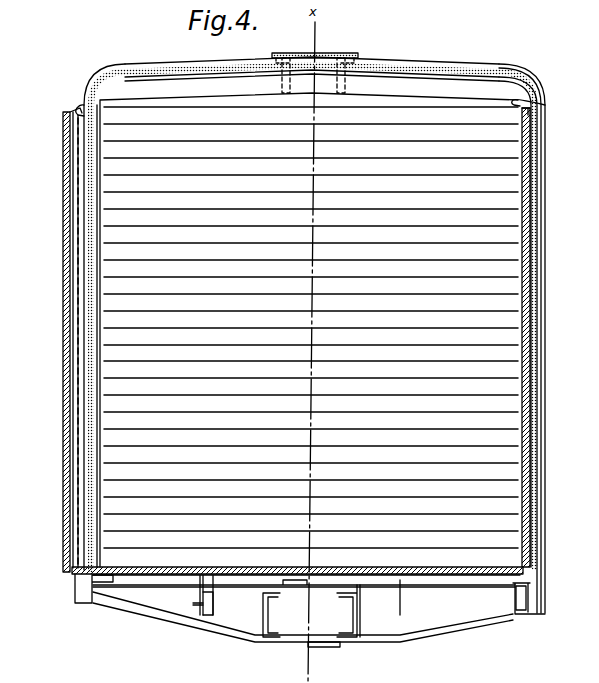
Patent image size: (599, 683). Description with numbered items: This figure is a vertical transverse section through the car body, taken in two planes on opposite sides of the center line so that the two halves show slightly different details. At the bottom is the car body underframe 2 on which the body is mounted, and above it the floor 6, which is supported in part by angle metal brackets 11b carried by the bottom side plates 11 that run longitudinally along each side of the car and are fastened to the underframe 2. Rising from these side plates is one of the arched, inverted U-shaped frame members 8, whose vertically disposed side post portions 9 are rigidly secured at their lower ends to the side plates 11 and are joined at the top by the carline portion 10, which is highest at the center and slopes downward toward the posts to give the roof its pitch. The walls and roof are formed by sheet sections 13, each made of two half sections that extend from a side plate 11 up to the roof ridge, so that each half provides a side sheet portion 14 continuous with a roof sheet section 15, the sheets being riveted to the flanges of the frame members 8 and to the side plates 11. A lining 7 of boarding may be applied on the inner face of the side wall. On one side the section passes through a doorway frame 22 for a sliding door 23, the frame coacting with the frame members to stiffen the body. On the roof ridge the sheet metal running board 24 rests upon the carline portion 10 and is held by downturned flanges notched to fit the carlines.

The car body underframe 2 is at (145, 580).
The floor 6 is at (447, 578).
The lining 7 is at (537, 252).
The frame member 8 is at (545, 365).
The side post portion 9 is at (542, 302).
The carline portion 10 is at (432, 63).
The bottom side plate 11 is at (76, 582).
The angle metal bracket 11b is at (515, 586).
The sheet section 13 is at (537, 338).
The side sheet portion 14 is at (537, 406).
The roof sheet section 15 is at (147, 51).
The doorway frame 22 is at (82, 146).
The sliding door 23 is at (70, 290).
The running board 24 is at (333, 54).